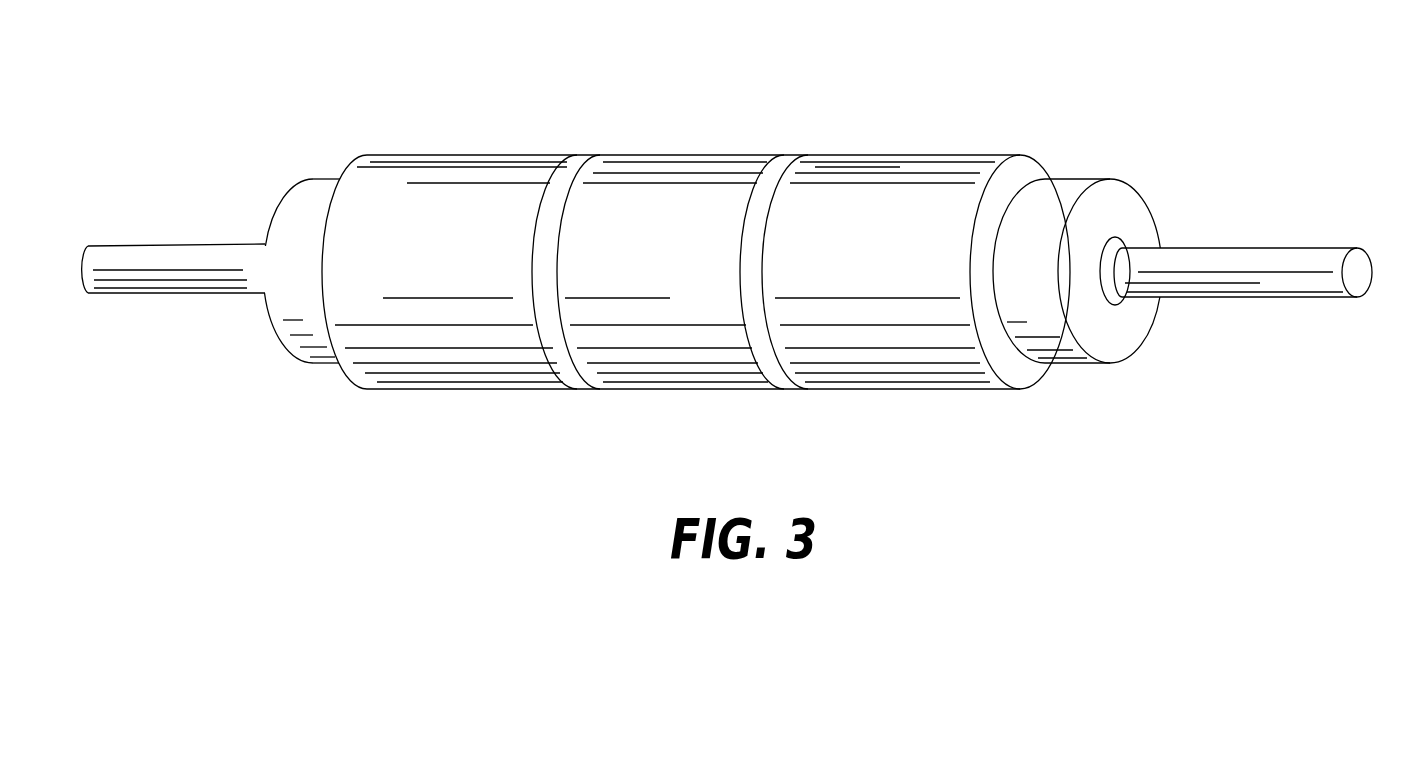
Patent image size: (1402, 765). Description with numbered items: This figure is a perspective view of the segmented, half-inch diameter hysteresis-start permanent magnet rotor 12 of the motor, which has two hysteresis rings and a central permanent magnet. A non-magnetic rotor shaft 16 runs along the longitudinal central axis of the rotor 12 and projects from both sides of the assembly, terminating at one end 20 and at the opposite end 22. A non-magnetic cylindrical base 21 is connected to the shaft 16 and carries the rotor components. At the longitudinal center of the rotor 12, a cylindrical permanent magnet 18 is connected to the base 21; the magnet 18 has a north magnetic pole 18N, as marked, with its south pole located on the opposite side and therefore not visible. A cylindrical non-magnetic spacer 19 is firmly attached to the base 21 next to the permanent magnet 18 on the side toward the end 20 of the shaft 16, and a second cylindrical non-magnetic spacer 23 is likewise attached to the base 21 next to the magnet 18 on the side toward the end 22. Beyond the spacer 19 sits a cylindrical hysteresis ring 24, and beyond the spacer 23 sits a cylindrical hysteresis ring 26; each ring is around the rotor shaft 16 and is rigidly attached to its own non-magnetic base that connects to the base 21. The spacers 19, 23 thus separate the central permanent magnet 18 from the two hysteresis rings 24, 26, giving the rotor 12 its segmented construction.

The rotor 12 is at (1004, 411).
The rotor shaft 16 is at (1225, 297).
The cylindrical permanent magnet 18 is at (693, 155).
The north magnetic pole 18N is at (690, 261).
The non-magnetic spacer 19 is at (600, 155).
The end of rotor shaft 20 is at (82, 274).
The non-magnetic cylindrical base 21 is at (316, 178).
The end of rotor shaft 22 is at (1355, 267).
The non-magnetic spacer 23 is at (808, 155).
The hysteresis ring 24 is at (433, 155).
The hysteresis ring 26 is at (933, 155).